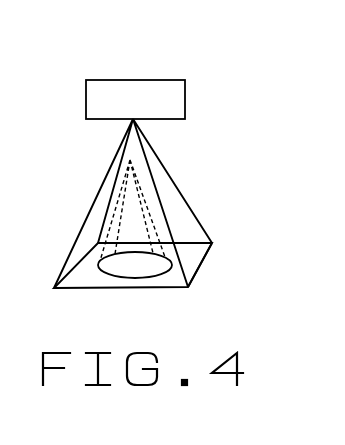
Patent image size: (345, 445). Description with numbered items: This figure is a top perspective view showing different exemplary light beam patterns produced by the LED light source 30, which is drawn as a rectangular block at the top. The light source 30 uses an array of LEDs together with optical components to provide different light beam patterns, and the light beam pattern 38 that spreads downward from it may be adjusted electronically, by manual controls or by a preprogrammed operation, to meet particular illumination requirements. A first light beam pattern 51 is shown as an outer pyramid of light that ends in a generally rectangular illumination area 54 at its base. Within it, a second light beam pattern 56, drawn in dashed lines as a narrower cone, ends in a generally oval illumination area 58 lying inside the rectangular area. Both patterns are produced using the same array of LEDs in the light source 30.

The LED light source 30 is at (135, 79).
The light beam pattern 38 is at (187, 183).
The first light beam pattern 51 is at (198, 220).
The rectangular illumination area 54 is at (187, 262).
The second light beam pattern 56 is at (138, 183).
The oval illumination area 58 is at (137, 267).